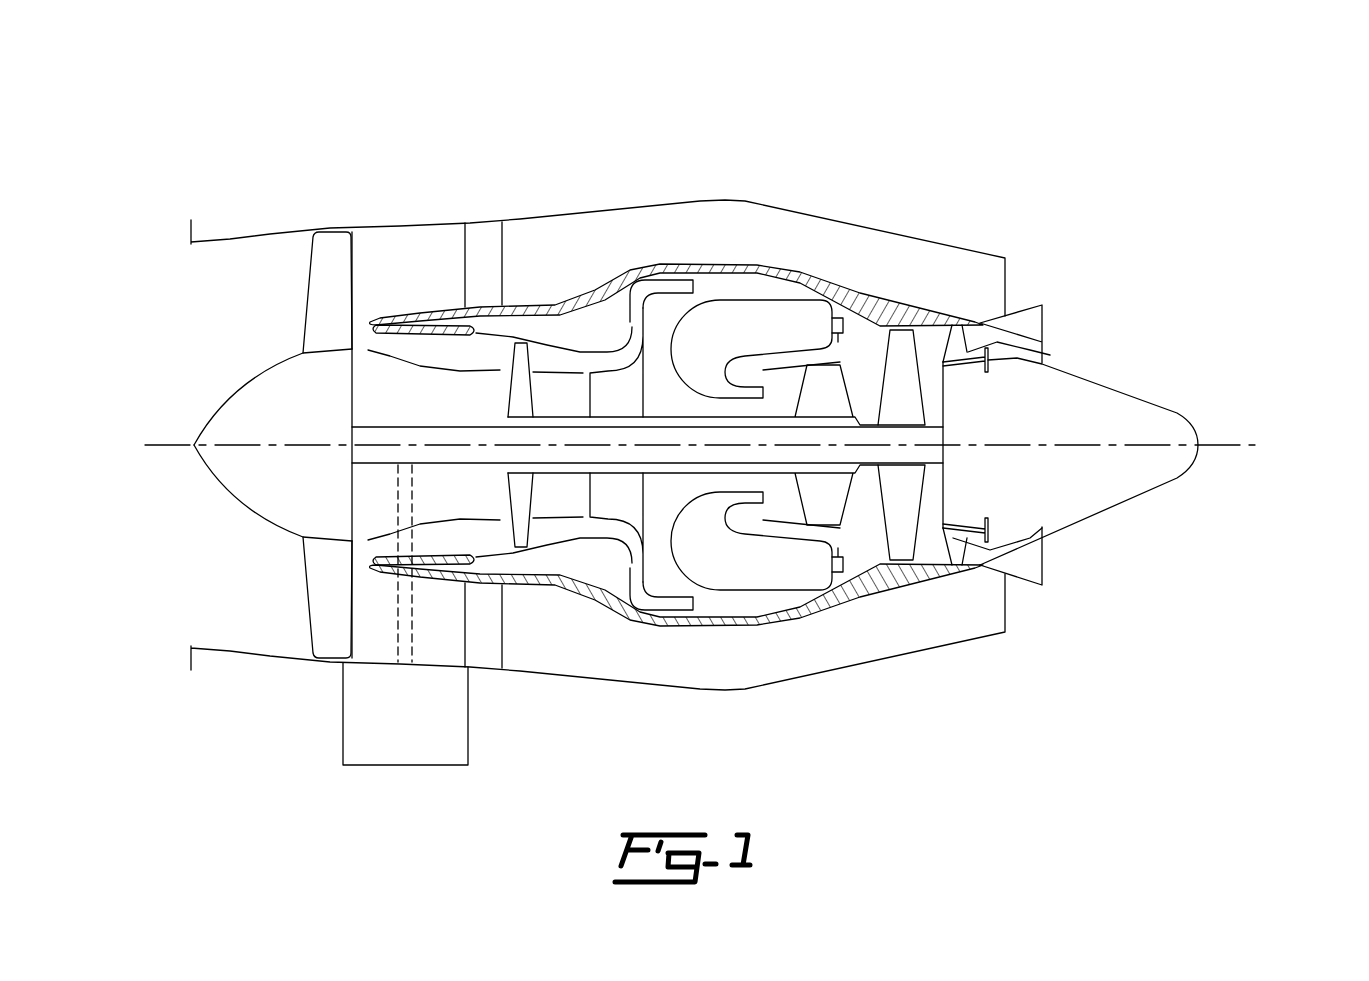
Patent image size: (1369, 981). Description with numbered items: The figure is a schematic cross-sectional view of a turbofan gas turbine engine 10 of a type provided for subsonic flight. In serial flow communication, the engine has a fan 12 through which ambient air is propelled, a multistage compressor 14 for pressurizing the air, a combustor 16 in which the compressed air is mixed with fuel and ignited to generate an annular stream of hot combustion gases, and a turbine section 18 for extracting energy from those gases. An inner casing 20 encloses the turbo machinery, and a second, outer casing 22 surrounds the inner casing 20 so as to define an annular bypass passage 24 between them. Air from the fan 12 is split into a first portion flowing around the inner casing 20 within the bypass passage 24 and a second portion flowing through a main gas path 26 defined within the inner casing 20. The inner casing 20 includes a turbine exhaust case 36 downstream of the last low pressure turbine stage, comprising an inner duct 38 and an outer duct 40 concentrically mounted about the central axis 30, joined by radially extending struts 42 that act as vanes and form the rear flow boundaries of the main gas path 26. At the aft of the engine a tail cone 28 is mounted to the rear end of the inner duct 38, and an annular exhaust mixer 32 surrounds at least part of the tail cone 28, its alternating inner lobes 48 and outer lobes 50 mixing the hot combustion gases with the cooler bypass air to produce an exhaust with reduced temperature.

The turbofan gas turbine engine 10 is at (876, 148).
The fan 12 is at (320, 585).
The multistage compressor 14 is at (560, 362).
The combustor 16 is at (738, 320).
The turbine section 18 is at (868, 537).
The inner casing 20 is at (850, 387).
The outer casing 22 is at (988, 252).
The bypass passage 24 is at (973, 603).
The main gas path 26 is at (427, 352).
The tail cone 28 is at (1113, 410).
The central axis 30 is at (1230, 445).
The exhaust mixer 32 is at (1027, 567).
The turbine exhaust case 36 is at (960, 306).
The inner duct 38 is at (1050, 355).
The outer duct 40 is at (913, 574).
The struts 42 is at (988, 524).
The inner lobes 48 is at (1030, 552).
The outer lobes 50 is at (1028, 300).